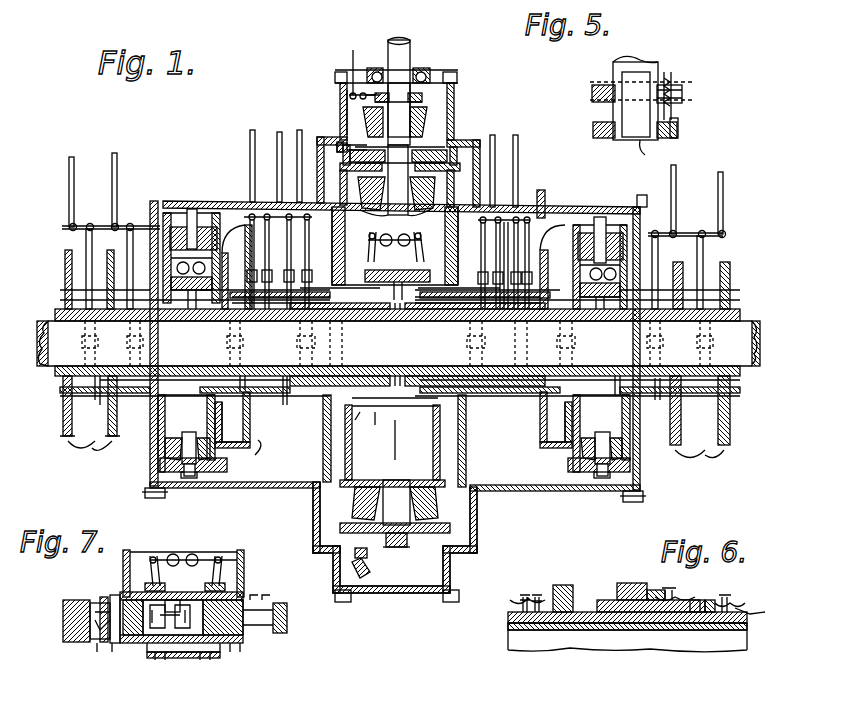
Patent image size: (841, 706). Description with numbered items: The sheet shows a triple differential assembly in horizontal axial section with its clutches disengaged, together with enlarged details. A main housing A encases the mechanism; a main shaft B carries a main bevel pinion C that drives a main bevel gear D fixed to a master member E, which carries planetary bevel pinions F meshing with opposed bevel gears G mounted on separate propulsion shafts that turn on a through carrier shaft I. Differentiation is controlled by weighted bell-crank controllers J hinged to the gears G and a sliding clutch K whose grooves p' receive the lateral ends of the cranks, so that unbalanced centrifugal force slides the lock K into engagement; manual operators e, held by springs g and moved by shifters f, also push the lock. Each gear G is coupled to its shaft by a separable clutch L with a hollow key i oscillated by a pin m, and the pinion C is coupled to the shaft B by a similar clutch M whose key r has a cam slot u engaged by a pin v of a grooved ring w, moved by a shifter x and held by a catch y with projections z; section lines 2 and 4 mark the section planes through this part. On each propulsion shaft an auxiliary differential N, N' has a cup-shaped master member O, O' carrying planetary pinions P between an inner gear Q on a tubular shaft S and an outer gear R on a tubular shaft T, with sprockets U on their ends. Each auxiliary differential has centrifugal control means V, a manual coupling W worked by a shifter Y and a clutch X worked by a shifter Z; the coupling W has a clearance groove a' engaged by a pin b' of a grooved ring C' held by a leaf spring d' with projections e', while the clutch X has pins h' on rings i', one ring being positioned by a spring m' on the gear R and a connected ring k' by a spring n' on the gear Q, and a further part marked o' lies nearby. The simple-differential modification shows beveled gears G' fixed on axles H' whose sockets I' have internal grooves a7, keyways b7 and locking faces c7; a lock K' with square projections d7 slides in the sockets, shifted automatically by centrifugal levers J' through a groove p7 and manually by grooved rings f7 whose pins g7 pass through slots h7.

In FIG. 1, the main housing A is at (243, 201).
In FIG. 1, the main shaft B is at (412, 58).
In FIG. 5, the main shaft B is at (613, 66).
In FIG. 1, the main bevel pinion C is at (398, 137).
In FIG. 5, the main bevel pinion C is at (645, 139).
In FIG. 1, the main bevel gear D is at (354, 112).
In FIG. 1, the master member E is at (346, 158).
In FIG. 1, the planetary bevel pinions F is at (372, 170).
In FIG. 1, the opposed bevel gears G is at (391, 201).
In FIG. 1, the differential beveled gears G' is at (395, 498).
In FIG. 7, the differential beveled gears G' is at (183, 573).
In FIG. 1, the centrifugally actuated controllers J is at (400, 253).
In FIG. 1, the centrifugally actuated clutch K is at (398, 257).
In FIG. 1, the reversible clutch M is at (410, 142).
In FIG. 5, the reversible clutch M is at (649, 151).
In FIG. 1, the planetary bevel pinions P is at (382, 349).
In FIG. 1, the inner differential bevel gear Q is at (393, 420).
In FIG. 6, the inner differential bevel gear Q is at (570, 592).
In FIG. 1, the outer differential gear R is at (158, 448).
In FIG. 6, the outer differential gear R is at (620, 586).
In FIG. 1, the tubular shaft S is at (398, 343).
In FIG. 6, the tubular shaft S is at (627, 630).
In FIG. 1, the tubular shaft T is at (395, 347).
In FIG. 6, the tubular shaft T is at (713, 595).
In FIG. 1, the drive gear provisions U is at (396, 448).
In FIG. 1, the automatic differentiation control means V is at (578, 266).
In FIG. 1, the manually operable coupling means W is at (245, 280).
In FIG. 1, the manually operable clutch means X is at (385, 333).
In FIG. 1, the manually operable shifter Y is at (70, 232).
In FIG. 1, the manually operable shifter Z is at (667, 253).
In FIG. 1, the shifter x is at (356, 53).
In FIG. 1, the peripheral cam slot u is at (397, 103).
In FIG. 5, the peripheral cam slot u is at (620, 88).
In FIG. 5, the pin v is at (626, 104).
In FIG. 1, the grooved ring w is at (402, 94).
In FIG. 5, the grooved ring w is at (682, 88).
In FIG. 5, the hollow key r is at (631, 125).
In FIG. 5, the spring catch y is at (668, 72).
In FIG. 5, the projections z is at (673, 82).
In FIG. 1, the section line 2 is at (390, 452).
In FIG. 1, the section line 4 is at (310, 96).
In FIG. 1, the grooves p' is at (287, 545).
In FIG. 7, the grooves p' is at (168, 651).
In FIG. 1, the opening o' is at (438, 345).
In FIG. 1, the auxiliary differential N is at (252, 457).
In FIG. 1, the chamber N' is at (531, 466).
In FIG. 1, the cup shaped master member O is at (272, 414).
In FIG. 1, the port O' is at (526, 447).
In FIG. 1, the internal clearance groove a' is at (598, 432).
In FIG. 1, the rings i' is at (377, 329).
In FIG. 6, the rings i' is at (675, 583).
In FIG. 1, the spring n' is at (444, 390).
In FIG. 6, the spring n' is at (526, 595).
In FIG. 1, the manual operators e is at (385, 437).
In FIG. 1, the manual shifter f is at (389, 429).
In FIG. 1, the pin m is at (589, 389).
In FIG. 1, the leaf spring d' is at (739, 350).
In FIG. 6, the leaf spring d' is at (752, 592).
In FIG. 1, the separable clutch L is at (378, 345).
In FIG. 1, the hollow tubular key i is at (386, 359).
In FIG. 1, the through shaft I is at (377, 357).
In FIG. 6, the through shaft I is at (627, 637).
In FIG. 1, the spring g is at (527, 351).
In FIG. 1, the ring k' is at (540, 323).
In FIG. 6, the ring k' is at (536, 592).
In FIG. 1, the pins h' is at (520, 274).
In FIG. 1, the pin b' is at (593, 335).
In FIG. 1, the grooved ring C' is at (701, 427).
In FIG. 6, the grooved ring C' is at (730, 593).
In FIG. 6, the spring m' is at (699, 594).
In FIG. 6, the projections e' is at (756, 607).
In FIG. 7, the centrifugal levers J' is at (191, 572).
In FIG. 7, the internal grooves a7 is at (181, 623).
In FIG. 7, the axial sockets I' is at (165, 635).
In FIG. 7, the slots h7 is at (63, 635).
In FIG. 7, the pins g7 is at (66, 605).
In FIG. 7, the differential axles H' is at (168, 585).
In FIG. 7, the grooved rings f7 is at (173, 580).
In FIG. 7, the locking faces c7 is at (104, 597).
In FIG. 7, the keyways b7 is at (173, 617).
In FIG. 7, the square peripheral projections d7 is at (175, 608).
In FIG. 7, the groove p7 is at (210, 612).
In FIG. 7, the lock K' is at (255, 586).